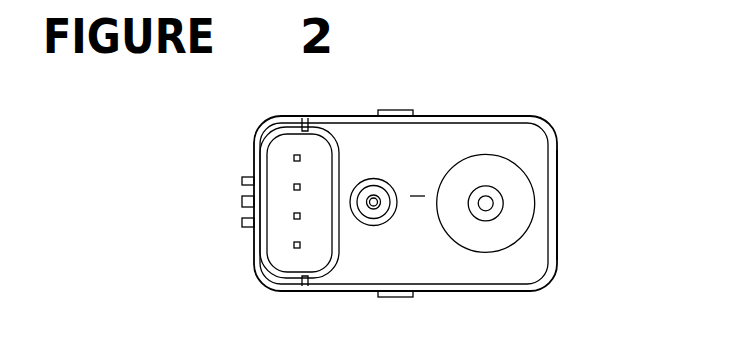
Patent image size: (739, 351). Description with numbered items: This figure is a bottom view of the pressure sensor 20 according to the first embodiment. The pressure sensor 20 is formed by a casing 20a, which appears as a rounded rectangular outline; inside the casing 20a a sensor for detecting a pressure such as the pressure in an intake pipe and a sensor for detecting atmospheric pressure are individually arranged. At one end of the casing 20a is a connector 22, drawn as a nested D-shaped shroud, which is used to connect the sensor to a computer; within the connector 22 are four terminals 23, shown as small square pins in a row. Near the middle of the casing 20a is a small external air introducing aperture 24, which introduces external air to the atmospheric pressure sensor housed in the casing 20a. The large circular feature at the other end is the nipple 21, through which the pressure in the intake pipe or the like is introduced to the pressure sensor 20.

The pressure sensor 20 is at (522, 147).
The casing 20a is at (557, 184).
The nipple 21 is at (503, 200).
The connector 22 is at (255, 153).
The terminals 23 is at (294, 158).
The external air introducing aperture 24 is at (380, 193).